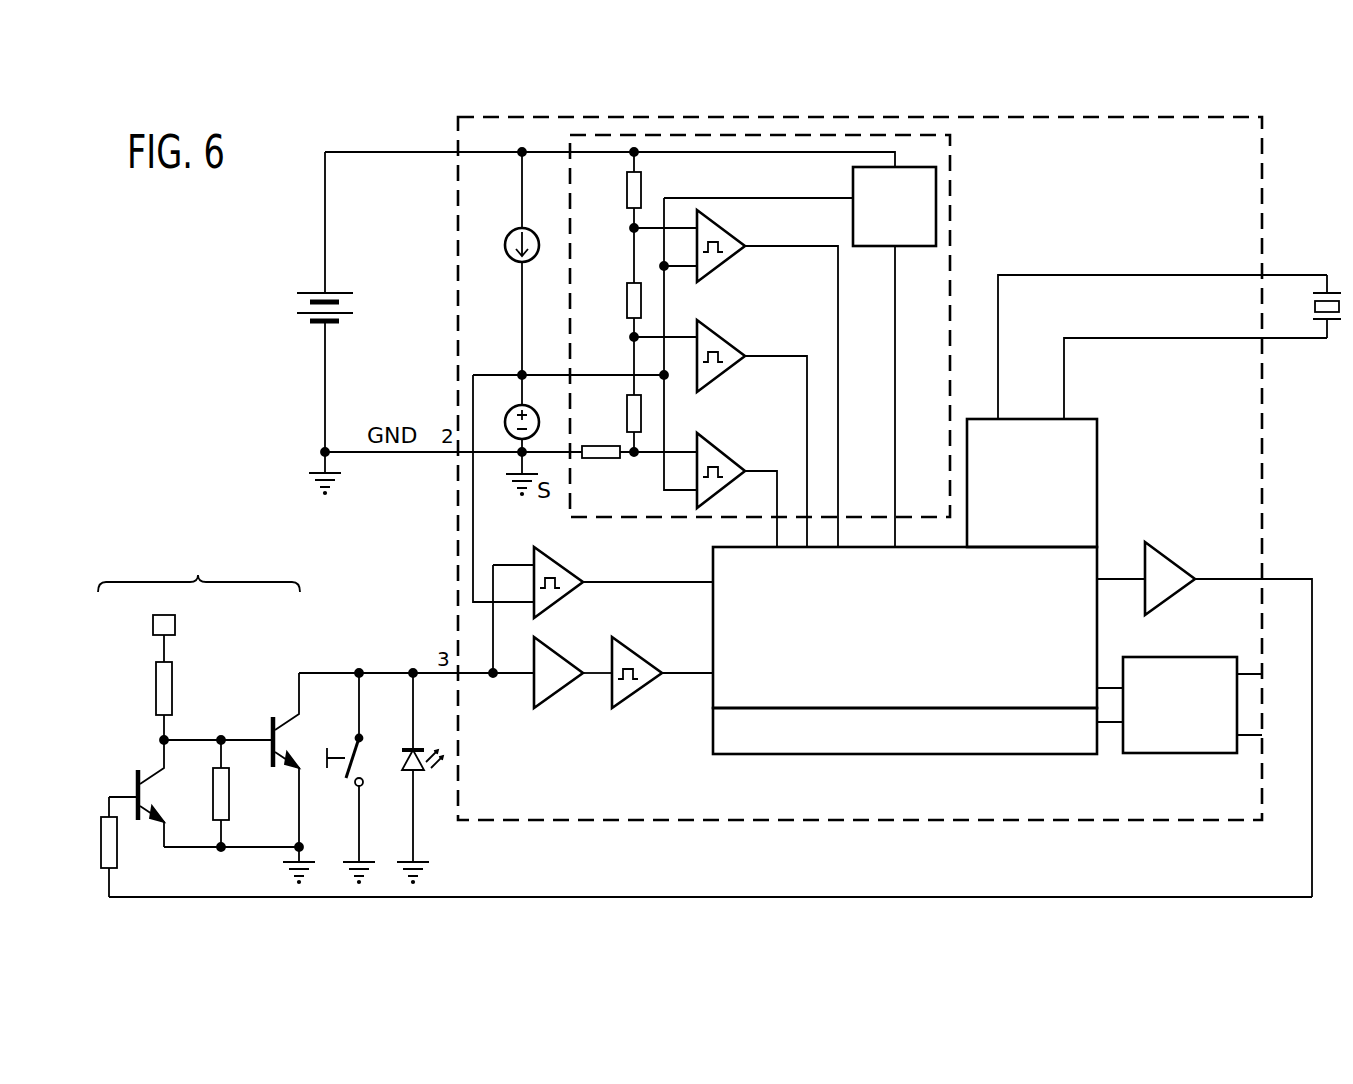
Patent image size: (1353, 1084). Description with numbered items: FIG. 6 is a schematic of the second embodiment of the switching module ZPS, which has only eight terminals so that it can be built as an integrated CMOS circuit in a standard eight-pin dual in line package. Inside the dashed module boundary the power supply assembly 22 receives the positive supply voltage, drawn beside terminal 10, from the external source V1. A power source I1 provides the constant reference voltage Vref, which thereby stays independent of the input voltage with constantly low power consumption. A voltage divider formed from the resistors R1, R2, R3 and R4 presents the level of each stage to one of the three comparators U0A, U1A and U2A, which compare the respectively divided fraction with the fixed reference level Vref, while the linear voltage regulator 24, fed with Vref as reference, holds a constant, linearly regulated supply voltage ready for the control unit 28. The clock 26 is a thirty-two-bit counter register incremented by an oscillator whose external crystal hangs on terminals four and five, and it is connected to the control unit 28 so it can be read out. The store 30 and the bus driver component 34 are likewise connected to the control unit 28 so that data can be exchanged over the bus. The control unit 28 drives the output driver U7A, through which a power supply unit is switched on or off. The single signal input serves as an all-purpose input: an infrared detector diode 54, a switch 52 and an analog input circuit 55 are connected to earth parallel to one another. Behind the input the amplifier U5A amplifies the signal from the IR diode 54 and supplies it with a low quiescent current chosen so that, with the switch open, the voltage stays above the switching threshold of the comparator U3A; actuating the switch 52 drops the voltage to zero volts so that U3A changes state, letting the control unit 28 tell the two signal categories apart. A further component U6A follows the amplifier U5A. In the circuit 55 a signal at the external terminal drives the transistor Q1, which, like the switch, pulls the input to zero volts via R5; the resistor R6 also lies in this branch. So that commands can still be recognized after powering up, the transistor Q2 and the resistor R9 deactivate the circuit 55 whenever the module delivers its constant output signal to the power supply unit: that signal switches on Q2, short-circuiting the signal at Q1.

The input/output terminal 10 is at (610, 144).
The power supply assembly 22 is at (952, 240).
The linear voltage regulator 24 is at (894, 357).
The clock 26 is at (1154, 399).
The control unit 28 is at (905, 627).
The store 30 is at (905, 731).
The bus driver component 34 is at (1191, 700).
The switch 52 is at (345, 757).
The infrared detector diode 54 is at (404, 747).
The analog input circuit 55 is at (192, 725).
The switching module ZPS is at (1262, 170).
The battery V1 is at (316, 302).
The power source I1 is at (515, 263).
The reference voltage Vref is at (509, 413).
The resistor R1 is at (601, 467).
The resistor R2 is at (619, 394).
The resistor R3 is at (619, 282).
The resistor R4 is at (619, 190).
The resistor R5 is at (147, 701).
The resistor R6 is at (206, 793).
The resistor R9 is at (93, 857).
The transistor Q1 is at (269, 760).
The transistor Q2 is at (134, 793).
The comparator U0A is at (759, 375).
The comparator U1A is at (743, 430).
The comparator U2A is at (728, 487).
The comparator U3A is at (603, 598).
The amplifier U5A is at (564, 661).
The Schmitt trigger buffer U6A is at (662, 661).
The output driver U7A is at (1204, 708).